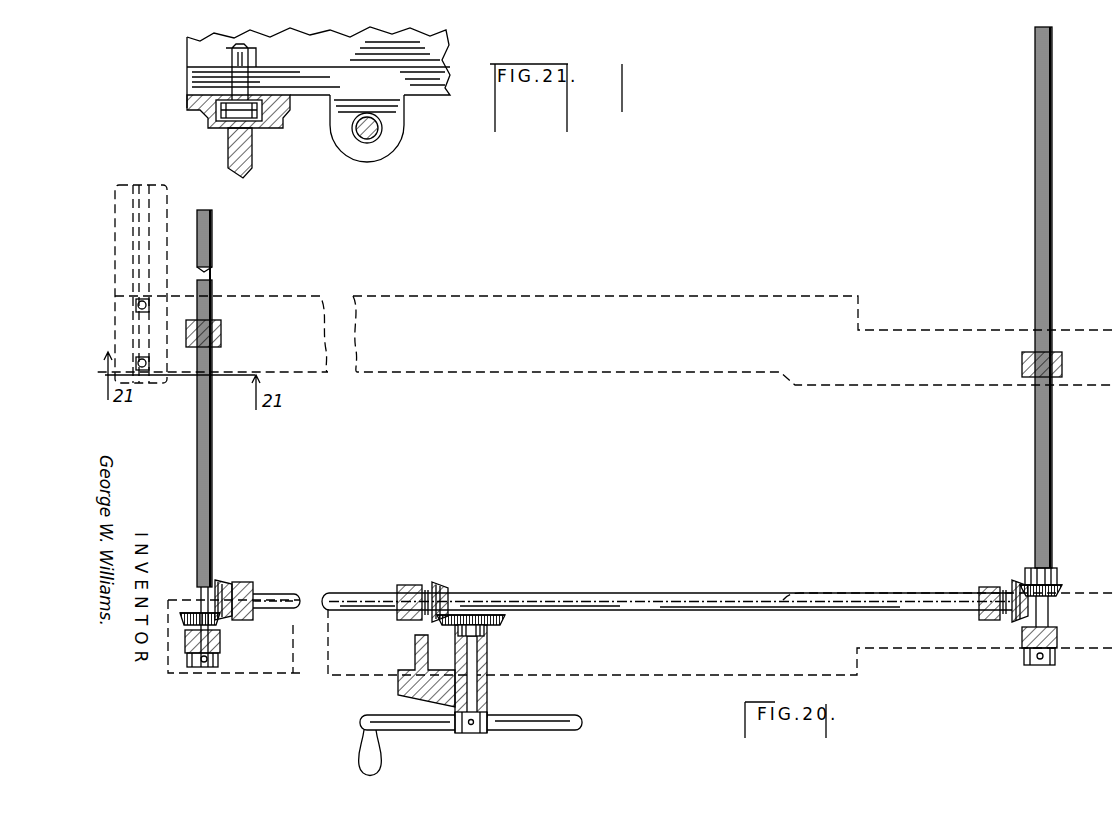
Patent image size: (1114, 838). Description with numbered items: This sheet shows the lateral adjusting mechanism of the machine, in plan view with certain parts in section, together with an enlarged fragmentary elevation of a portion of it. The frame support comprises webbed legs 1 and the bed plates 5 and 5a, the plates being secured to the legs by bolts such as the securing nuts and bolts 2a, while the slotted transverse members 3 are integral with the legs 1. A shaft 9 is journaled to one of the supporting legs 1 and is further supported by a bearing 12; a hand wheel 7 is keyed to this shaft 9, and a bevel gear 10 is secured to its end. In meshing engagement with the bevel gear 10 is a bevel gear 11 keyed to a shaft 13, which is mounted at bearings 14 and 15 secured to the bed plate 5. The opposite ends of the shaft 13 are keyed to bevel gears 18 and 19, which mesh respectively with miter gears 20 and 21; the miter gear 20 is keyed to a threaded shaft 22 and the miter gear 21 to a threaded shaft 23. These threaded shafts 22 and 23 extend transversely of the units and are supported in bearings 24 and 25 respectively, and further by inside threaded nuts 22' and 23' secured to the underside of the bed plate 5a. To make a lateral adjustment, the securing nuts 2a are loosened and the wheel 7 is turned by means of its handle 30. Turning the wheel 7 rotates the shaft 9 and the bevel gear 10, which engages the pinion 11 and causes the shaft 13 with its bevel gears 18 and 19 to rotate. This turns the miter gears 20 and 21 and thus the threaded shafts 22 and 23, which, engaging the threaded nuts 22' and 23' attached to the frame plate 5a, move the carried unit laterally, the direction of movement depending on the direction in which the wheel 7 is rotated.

In FIG. 21, the webbed leg 1 is at (250, 158).
In FIG. 21, the bolt 2a is at (258, 60).
In FIG. 21, the slotted transverse member 3 is at (212, 115).
In FIG. 20, the bed plate 5 is at (690, 668).
In FIG. 21, the bed plate 5a is at (425, 48).
In FIG. 20, the bed plate 5a is at (746, 301).
In FIG. 20, the hand wheel 7 is at (582, 725).
In FIG. 20, the shaft 9 is at (487, 694).
In FIG. 20, the bevel gear 10 is at (506, 621).
In FIG. 20, the bevel gear 11 is at (440, 583).
In FIG. 20, the bearing 12 is at (470, 664).
In FIG. 20, the shaft 13 is at (612, 598).
In FIG. 20, the bearing 14 is at (250, 585).
In FIG. 20, the bearing 15 is at (990, 586).
In FIG. 20, the bevel gear 18 is at (226, 580).
In FIG. 20, the bevel gear 19 is at (1016, 620).
In FIG. 20, the miter gear 20 is at (192, 612).
In FIG. 20, the miter gear 21 is at (1060, 584).
In FIG. 21, the threaded shaft 22 is at (391, 128).
In FIG. 20, the threaded shaft 22 is at (225, 438).
In FIG. 20, the threaded nut 22' is at (227, 332).
In FIG. 20, the threaded shaft 23 is at (1024, 297).
In FIG. 20, the threaded nut 23' is at (1063, 362).
In FIG. 20, the bearing 24 is at (224, 645).
In FIG. 20, the bearing 25 is at (1023, 638).
In FIG. 20, the handle 30 is at (381, 770).